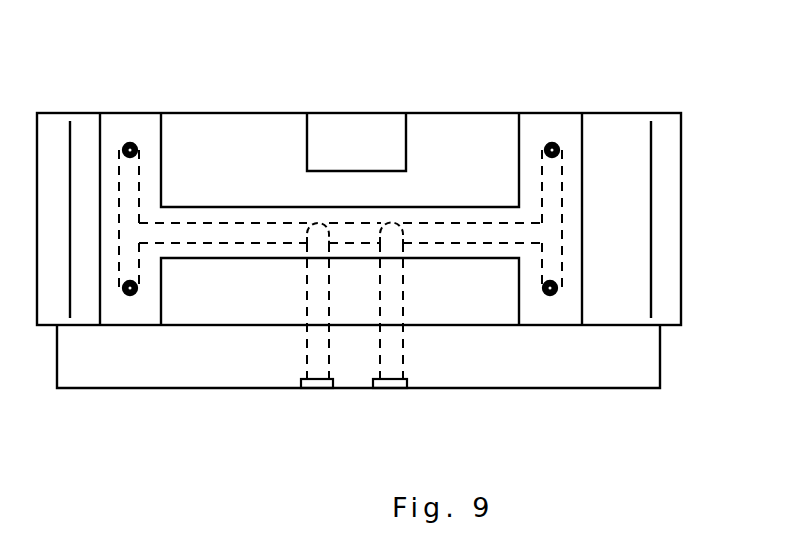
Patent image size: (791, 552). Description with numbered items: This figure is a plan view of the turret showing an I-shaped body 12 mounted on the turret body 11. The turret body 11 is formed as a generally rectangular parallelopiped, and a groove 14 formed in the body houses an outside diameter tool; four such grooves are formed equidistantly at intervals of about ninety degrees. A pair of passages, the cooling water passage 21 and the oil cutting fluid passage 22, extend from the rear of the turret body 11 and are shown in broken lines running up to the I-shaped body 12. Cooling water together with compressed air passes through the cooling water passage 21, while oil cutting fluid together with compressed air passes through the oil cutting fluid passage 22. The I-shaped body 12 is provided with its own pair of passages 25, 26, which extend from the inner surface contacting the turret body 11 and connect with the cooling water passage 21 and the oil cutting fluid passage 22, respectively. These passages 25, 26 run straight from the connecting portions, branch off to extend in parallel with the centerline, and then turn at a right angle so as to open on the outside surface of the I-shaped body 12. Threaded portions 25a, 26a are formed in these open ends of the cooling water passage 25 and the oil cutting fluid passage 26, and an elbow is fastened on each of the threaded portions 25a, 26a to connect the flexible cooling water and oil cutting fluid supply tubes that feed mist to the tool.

The turret body 11 is at (615, 132).
The I-shaped body 12 is at (565, 118).
The groove 14 is at (365, 171).
The cooling water passage 21 is at (403, 357).
The oil cutting fluid passage 22 is at (307, 336).
The cooling water passage 25 is at (437, 223).
The threaded portion 25a is at (548, 147).
The oil cutting fluid passage 26 is at (228, 223).
The threaded portion 26a is at (130, 143).